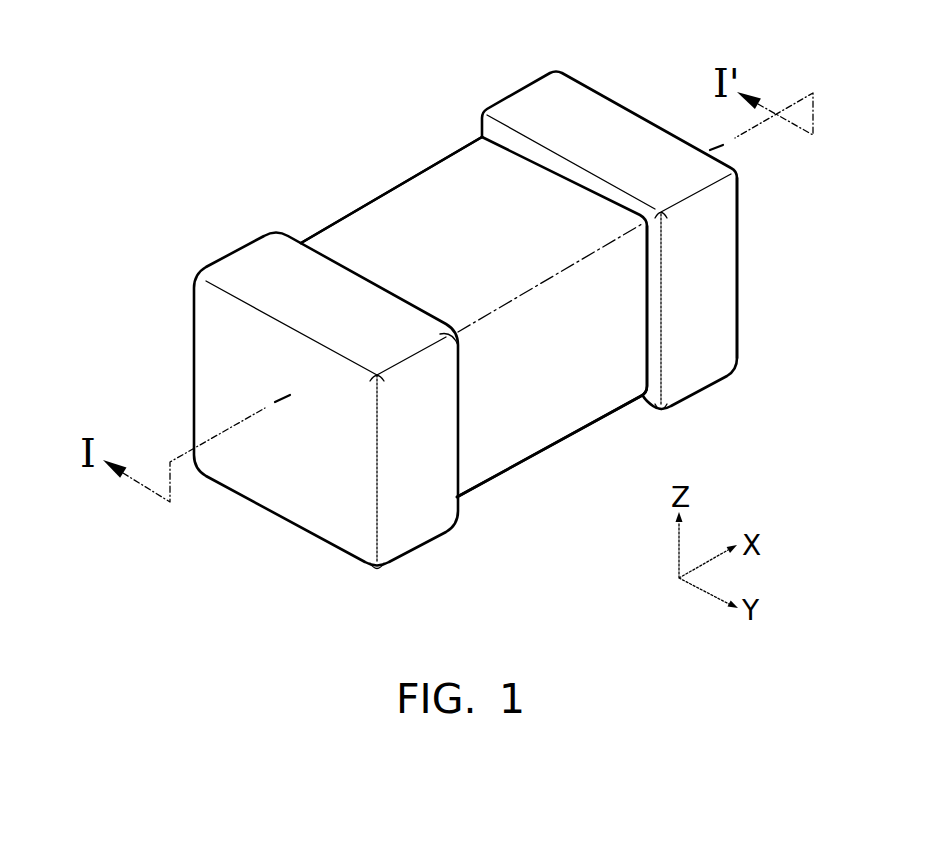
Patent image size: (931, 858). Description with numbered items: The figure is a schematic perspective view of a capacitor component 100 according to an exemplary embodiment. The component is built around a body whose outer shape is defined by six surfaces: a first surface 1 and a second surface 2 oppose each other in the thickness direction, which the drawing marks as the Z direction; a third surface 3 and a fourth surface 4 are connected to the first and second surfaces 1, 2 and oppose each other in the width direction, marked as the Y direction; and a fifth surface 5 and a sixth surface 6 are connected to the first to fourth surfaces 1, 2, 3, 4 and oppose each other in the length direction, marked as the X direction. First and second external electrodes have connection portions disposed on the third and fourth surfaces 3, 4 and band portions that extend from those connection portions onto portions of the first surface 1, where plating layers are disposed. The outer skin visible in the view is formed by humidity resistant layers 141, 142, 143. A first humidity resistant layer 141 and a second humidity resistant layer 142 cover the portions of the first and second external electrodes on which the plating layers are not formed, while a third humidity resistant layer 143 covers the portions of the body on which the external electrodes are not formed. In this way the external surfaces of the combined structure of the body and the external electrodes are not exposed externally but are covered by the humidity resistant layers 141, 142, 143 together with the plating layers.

The capacitor component 100 is at (251, 85).
The first surface 1 is at (509, 427).
The second surface 2 is at (477, 186).
The third surface 3 is at (283, 470).
The fourth surface 4 is at (694, 254).
The fifth surface 5 is at (576, 392).
The sixth surface 6 is at (417, 213).
The first humidity resistant layer 141 is at (255, 268).
The second humidity resistant layer 142 is at (527, 110).
The third humidity resistant layer 143 is at (357, 230).